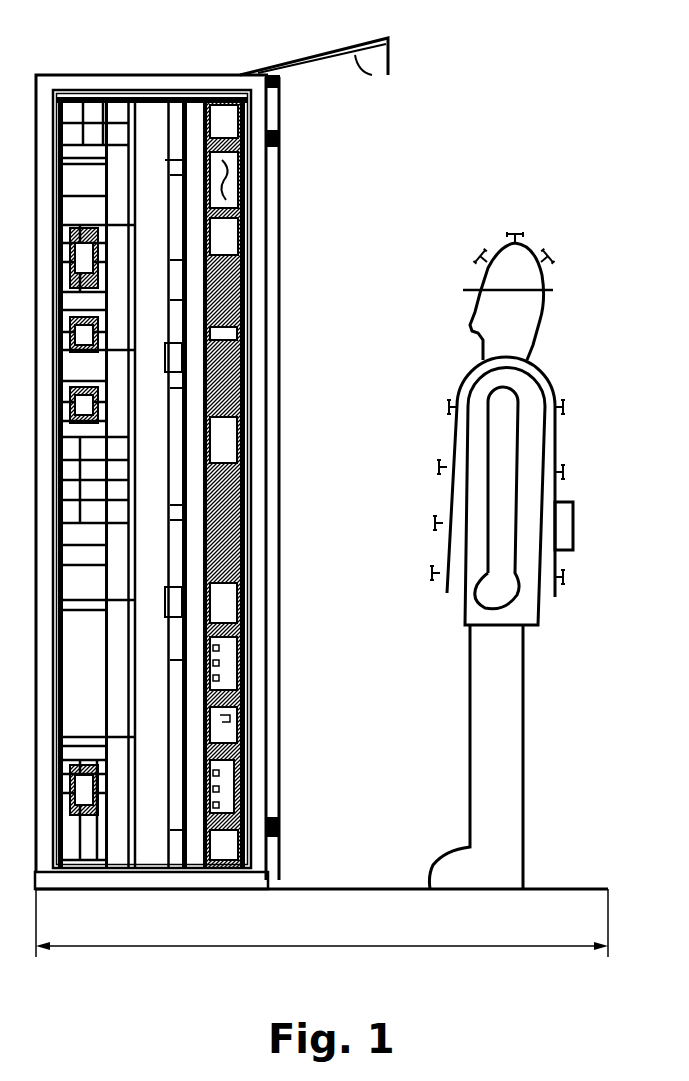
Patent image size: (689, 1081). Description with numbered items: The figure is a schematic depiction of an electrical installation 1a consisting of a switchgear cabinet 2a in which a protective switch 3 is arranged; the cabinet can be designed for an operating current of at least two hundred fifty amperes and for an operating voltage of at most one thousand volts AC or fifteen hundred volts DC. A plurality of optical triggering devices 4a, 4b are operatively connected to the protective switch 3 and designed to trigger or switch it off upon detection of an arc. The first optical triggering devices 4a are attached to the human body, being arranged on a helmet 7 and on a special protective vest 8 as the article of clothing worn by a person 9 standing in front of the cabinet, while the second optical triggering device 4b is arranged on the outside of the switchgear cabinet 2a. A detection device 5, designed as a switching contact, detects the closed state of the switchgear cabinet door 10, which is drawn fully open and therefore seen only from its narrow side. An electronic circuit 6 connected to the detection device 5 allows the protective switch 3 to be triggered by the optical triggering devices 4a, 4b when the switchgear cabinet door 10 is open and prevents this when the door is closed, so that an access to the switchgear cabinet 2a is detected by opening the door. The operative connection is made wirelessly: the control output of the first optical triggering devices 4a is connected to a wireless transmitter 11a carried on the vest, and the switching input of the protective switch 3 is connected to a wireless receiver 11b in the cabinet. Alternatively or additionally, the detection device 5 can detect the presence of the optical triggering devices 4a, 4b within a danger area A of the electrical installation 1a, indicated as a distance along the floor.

The electrical installation 1a is at (556, 78).
The switchgear cabinet 2a is at (258, 313).
The protective switch 3 is at (228, 790).
The first optical triggering device 4a is at (449, 405).
The second optical triggering device 4b is at (376, 60).
The detection device 5 is at (281, 138).
The electronic circuit 6 is at (229, 843).
The helmet 7 is at (520, 257).
The protective vest 8 is at (558, 440).
The person 9 is at (529, 330).
The switchgear cabinet door 10 is at (276, 200).
The wireless transmitter 11a is at (565, 530).
The wireless receiver 11b is at (226, 738).
The danger area A is at (322, 923).